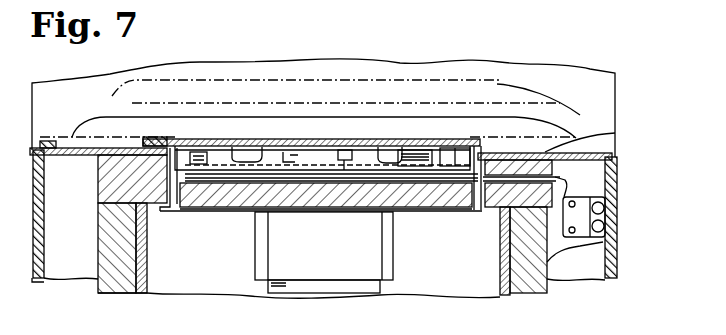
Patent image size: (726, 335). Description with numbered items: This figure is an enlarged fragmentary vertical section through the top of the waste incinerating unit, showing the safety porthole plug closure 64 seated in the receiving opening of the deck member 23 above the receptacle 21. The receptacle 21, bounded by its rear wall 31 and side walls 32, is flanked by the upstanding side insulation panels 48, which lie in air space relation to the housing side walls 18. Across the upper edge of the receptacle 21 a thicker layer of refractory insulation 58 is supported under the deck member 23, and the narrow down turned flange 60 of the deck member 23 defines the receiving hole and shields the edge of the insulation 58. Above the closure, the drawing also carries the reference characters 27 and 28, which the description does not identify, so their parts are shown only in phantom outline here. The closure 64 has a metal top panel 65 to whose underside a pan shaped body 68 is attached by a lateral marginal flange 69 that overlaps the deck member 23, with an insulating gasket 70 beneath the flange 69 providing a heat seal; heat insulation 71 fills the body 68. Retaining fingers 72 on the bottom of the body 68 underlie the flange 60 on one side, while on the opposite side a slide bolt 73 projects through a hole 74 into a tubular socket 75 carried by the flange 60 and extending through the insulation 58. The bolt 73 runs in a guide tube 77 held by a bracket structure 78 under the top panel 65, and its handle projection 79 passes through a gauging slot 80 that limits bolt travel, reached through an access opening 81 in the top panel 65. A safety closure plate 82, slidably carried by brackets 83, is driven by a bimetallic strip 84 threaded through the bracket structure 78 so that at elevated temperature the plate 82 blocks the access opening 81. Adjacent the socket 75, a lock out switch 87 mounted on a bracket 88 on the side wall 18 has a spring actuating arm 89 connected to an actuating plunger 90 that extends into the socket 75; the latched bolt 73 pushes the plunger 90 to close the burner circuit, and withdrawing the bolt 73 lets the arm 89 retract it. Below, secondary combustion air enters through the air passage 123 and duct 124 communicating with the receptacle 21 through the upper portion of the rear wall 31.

The side wall 18 is at (618, 277).
The receptacle 21 is at (479, 306).
The deck member 23 is at (50, 141).
The cover in open position (phantom) 27 is at (500, 135).
The cover 28 is at (497, 84).
The rear wall 31 is at (412, 294).
The side walls 32 is at (143, 296).
The side insulation panels 48 is at (100, 293).
The refractory insulation layer 58 is at (110, 232).
The down turned flange 60 is at (110, 199).
The safety porthole plug closure 64 is at (385, 131).
The top panel 65 is at (198, 152).
The pan shaped body 68 is at (243, 212).
The lateral marginal flange 69 is at (152, 147).
The insulating gasket 70 is at (115, 160).
The heat insulation 71 is at (408, 208).
The retaining fingers 72 is at (175, 213).
The slide bolt 73 is at (455, 150).
The hole 74 is at (477, 212).
The tubular socket 75 is at (516, 153).
The guide tube 77 is at (306, 185).
The bracket structure 78 is at (433, 148).
The manipulating handle projection 79 is at (348, 137).
The gauging slot 80 is at (340, 178).
The access opening 81 is at (378, 150).
The safety closure plate 82 is at (300, 152).
The brackets 83 is at (258, 150).
The bimetallic strip 84 is at (221, 178).
The lock out switch 87 is at (612, 253).
The bracket 88 is at (596, 215).
The spring actuating arm 89 is at (618, 177).
The actuating plunger 90 is at (616, 136).
The air passage 123 is at (320, 268).
The secondary air duct 124 is at (255, 267).